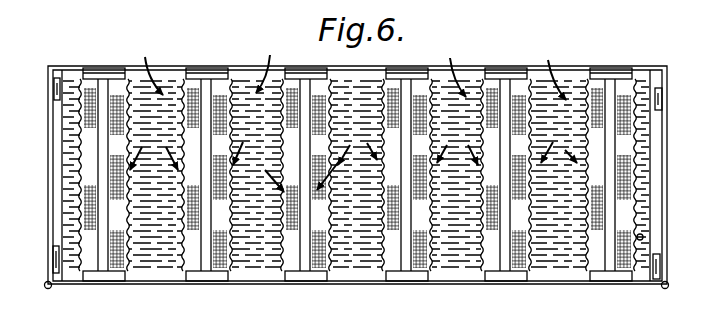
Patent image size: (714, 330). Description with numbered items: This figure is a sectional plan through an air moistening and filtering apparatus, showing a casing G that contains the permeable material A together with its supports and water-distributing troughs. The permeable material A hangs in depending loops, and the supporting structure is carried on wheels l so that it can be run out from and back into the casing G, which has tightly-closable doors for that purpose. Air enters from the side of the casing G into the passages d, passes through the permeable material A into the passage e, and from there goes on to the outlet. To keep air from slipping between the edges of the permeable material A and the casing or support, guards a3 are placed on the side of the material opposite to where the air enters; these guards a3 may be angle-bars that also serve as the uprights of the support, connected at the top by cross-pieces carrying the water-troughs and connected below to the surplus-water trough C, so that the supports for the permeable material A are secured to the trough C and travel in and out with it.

The casing G is at (48, 133).
The inner wall lining c is at (62, 187).
The wheels l is at (56, 80).
The passage e is at (358, 175).
The guards a3 is at (205, 70).
The passages d is at (357, 91).
The permeable material A is at (77, 221).
The surplus-water trough C is at (670, 183).